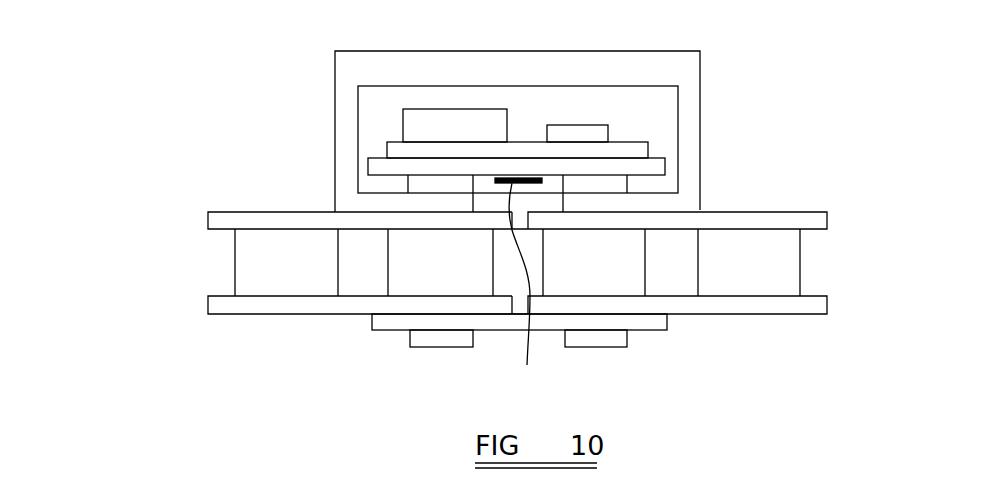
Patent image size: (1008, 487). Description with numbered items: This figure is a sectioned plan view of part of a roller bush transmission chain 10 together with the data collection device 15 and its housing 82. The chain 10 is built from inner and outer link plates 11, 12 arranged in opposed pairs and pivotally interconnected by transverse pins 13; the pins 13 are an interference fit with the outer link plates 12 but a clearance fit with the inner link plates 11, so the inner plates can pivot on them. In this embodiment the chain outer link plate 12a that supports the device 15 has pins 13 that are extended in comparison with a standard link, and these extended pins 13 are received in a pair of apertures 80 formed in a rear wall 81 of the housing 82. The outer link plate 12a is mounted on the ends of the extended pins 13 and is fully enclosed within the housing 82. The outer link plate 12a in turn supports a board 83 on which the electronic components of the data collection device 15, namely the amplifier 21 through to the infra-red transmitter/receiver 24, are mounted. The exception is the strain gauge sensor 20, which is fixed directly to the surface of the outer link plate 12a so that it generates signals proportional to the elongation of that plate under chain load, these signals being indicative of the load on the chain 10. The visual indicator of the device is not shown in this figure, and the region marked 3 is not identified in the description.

The semiconductor component 3 is at (597, 196).
The transmission chain 10 is at (484, 248).
The inner link plate 11 is at (222, 268).
The outer link plate 12 is at (373, 332).
The chain outer link plate 12a is at (370, 170).
The transverse pins 13 is at (432, 340).
The data collection device 15 is at (532, 134).
The sensor 20 is at (518, 289).
The amplifier 21 is at (457, 123).
The infra-red transmitter/receiver 24 is at (568, 128).
The apertures 80 is at (423, 202).
The rear wall 81 is at (670, 202).
The housing 82 is at (335, 72).
The board 83 is at (580, 143).